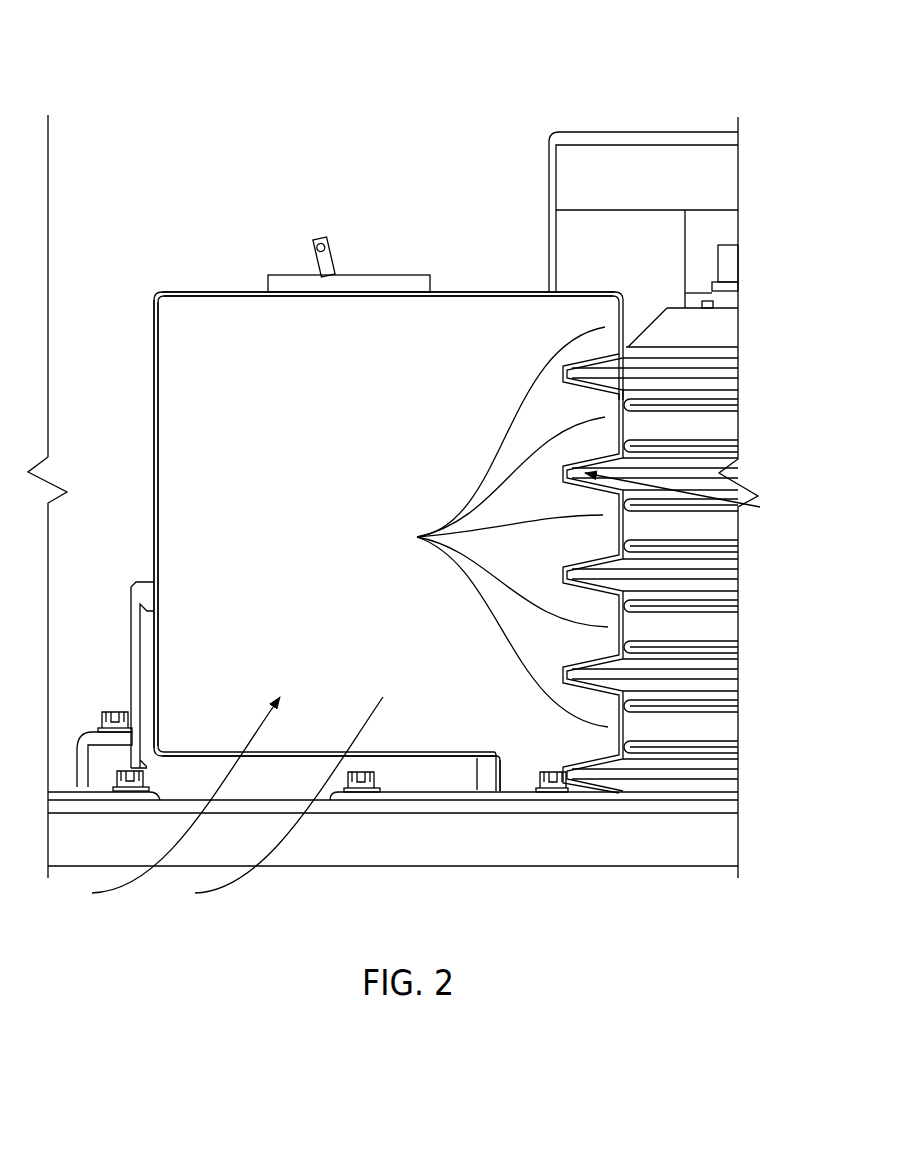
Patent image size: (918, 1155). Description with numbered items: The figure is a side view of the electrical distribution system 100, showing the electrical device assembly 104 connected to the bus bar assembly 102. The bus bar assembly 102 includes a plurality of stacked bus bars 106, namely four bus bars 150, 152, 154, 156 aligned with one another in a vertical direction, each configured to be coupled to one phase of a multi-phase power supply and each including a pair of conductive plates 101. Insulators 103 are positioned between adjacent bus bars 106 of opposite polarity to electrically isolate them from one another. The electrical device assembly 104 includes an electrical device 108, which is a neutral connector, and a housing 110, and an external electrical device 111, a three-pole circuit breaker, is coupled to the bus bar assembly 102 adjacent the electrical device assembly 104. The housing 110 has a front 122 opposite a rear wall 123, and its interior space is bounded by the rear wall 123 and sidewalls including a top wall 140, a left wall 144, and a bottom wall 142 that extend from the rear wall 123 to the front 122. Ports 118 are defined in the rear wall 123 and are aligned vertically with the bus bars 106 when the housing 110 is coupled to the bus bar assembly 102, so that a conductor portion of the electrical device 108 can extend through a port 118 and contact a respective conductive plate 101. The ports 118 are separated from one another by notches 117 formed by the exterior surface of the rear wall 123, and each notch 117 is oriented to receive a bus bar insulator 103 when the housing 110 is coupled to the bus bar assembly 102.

The electrical distribution system 100 is at (704, 58).
The conductive plate 101 is at (720, 405).
The bus bar assembly 102 is at (750, 283).
The insulator 103 is at (720, 673).
The electrical device assembly 104 is at (166, 801).
The bus bars 106 is at (720, 385).
The electrical device 108 is at (153, 540).
The housing 110 is at (270, 801).
The external electrical device 111 is at (321, 238).
The notch 117 is at (692, 498).
The port 118 is at (492, 527).
The front 122 is at (142, 341).
The rear wall 123 is at (628, 312).
The top wall 140 is at (183, 291).
The bottom wall 142 is at (422, 758).
The left wall 144 is at (187, 483).
The bus bar 150 is at (697, 725).
The bus bar 152 is at (705, 622).
The bus bar 154 is at (707, 525).
The bus bar 156 is at (707, 430).